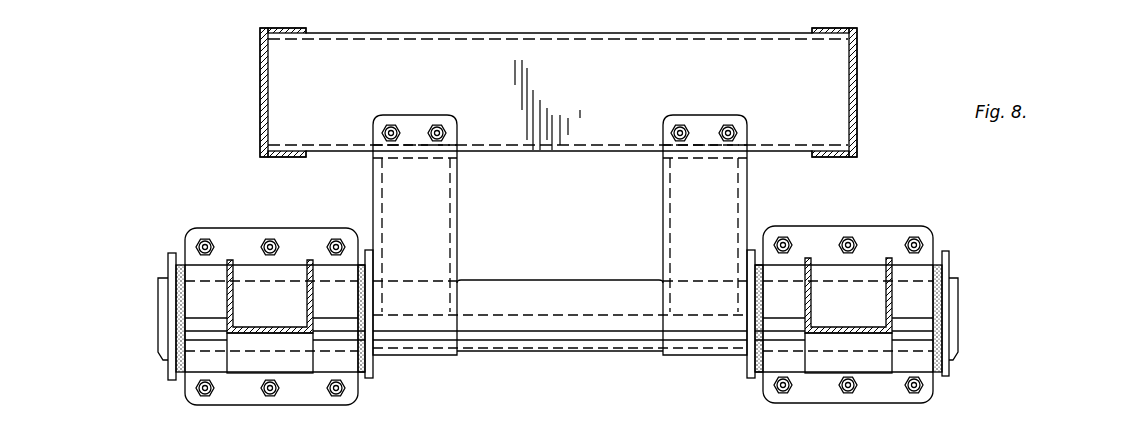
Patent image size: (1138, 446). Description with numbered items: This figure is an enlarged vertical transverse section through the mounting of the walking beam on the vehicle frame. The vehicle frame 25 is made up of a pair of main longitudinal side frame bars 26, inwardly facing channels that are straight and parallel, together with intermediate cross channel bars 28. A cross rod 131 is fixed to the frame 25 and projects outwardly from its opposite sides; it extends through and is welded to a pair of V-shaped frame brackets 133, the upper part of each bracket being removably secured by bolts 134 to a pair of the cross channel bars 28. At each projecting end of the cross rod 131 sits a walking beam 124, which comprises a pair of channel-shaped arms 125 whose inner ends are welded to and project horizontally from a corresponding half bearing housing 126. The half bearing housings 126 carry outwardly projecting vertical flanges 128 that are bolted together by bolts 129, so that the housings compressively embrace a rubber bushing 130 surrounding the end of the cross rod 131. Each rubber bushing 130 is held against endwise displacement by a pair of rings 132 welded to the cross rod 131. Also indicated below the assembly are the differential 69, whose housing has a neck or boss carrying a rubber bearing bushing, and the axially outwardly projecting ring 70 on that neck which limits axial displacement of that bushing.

The vehicle frame 25 is at (243, 48).
The main longitudinal side frame bars 26 is at (258, 110).
The intermediate cross channel bars 28 is at (553, 52).
The V-shaped frame brackets 133 is at (440, 192).
The bolts 134 is at (396, 120).
The cross rod 131 is at (576, 288).
The vertical flanges 128 is at (250, 228).
The bolts 129 is at (272, 238).
The half bearing housing 126 is at (212, 299).
The channel-shaped arms 125 is at (306, 298).
The walking beam 124 is at (257, 352).
The rubber bushing 130 is at (178, 330).
The rings 132 is at (167, 375).
The axially outwardly projecting ring 70 is at (515, 445).
The differential 69 is at (566, 444).